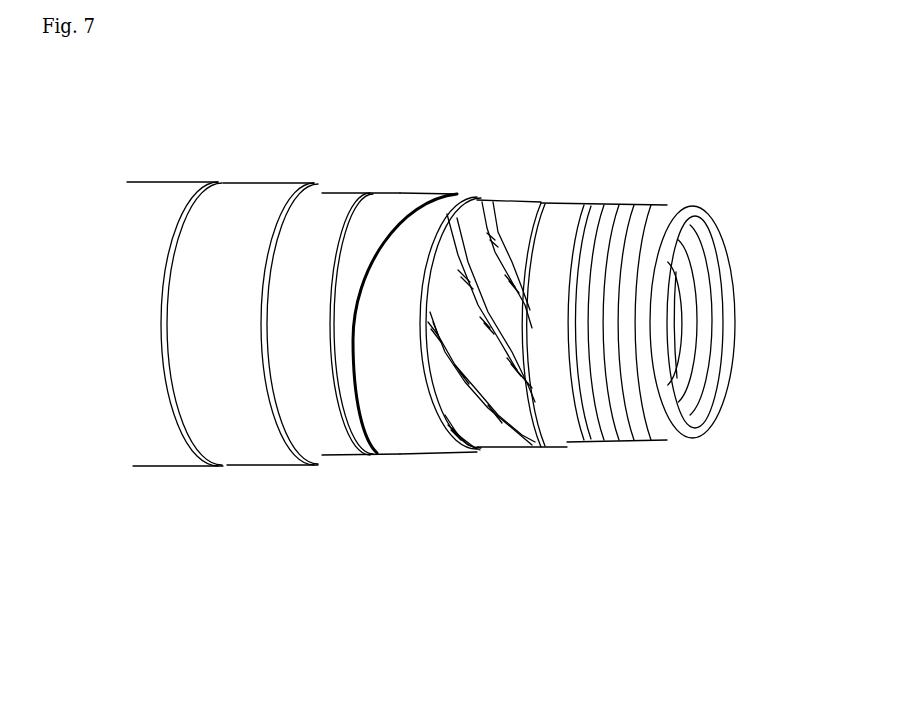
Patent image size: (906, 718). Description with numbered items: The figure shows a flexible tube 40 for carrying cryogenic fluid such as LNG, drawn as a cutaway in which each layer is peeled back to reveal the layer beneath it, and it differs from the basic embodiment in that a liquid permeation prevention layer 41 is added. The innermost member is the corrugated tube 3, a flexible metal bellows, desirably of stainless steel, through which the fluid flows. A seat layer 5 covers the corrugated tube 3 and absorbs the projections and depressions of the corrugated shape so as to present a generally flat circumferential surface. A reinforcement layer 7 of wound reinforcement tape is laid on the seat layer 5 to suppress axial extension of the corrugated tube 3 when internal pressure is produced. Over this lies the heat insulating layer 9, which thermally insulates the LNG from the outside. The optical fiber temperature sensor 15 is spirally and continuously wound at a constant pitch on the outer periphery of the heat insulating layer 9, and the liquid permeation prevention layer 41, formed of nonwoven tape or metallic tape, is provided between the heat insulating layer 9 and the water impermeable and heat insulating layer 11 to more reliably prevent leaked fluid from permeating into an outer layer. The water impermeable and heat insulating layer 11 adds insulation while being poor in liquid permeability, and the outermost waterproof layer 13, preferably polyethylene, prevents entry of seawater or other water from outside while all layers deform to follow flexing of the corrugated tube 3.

The flexible tube 40 is at (298, 160).
The liquid permeation prevention layer 41 is at (330, 200).
The optical fiber temperature sensor 15 is at (417, 198).
The waterproof layer 13 is at (167, 448).
The water impermeable and heat insulating layer 11 is at (280, 457).
The heat insulating layer 9 is at (403, 445).
The reinforcement layer 7 is at (485, 433).
The seat layer 5 is at (577, 435).
The corrugated tube 3 is at (670, 438).